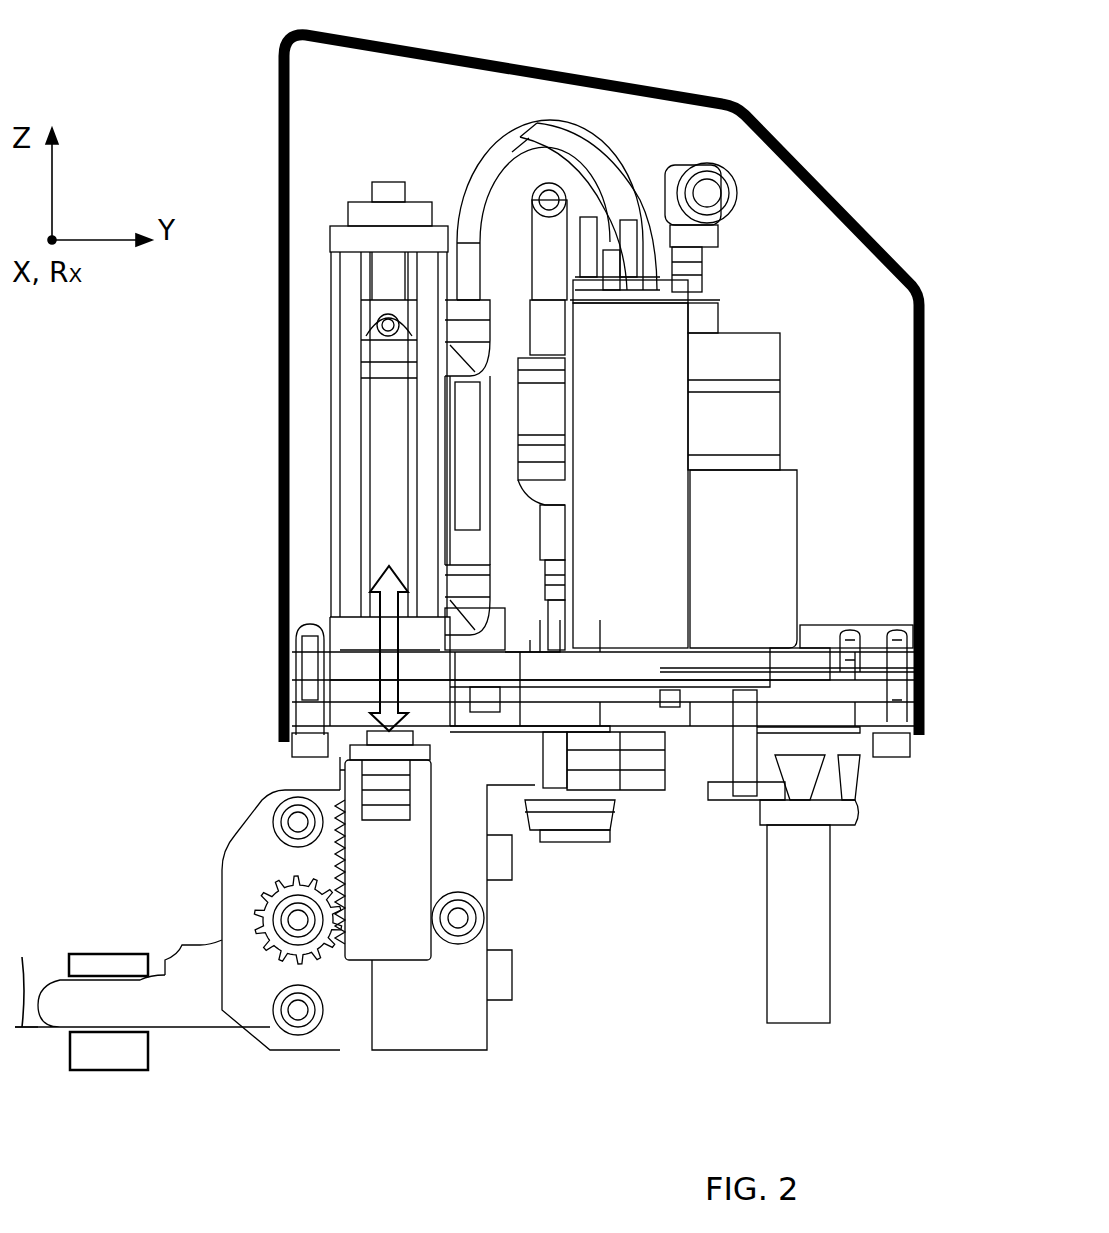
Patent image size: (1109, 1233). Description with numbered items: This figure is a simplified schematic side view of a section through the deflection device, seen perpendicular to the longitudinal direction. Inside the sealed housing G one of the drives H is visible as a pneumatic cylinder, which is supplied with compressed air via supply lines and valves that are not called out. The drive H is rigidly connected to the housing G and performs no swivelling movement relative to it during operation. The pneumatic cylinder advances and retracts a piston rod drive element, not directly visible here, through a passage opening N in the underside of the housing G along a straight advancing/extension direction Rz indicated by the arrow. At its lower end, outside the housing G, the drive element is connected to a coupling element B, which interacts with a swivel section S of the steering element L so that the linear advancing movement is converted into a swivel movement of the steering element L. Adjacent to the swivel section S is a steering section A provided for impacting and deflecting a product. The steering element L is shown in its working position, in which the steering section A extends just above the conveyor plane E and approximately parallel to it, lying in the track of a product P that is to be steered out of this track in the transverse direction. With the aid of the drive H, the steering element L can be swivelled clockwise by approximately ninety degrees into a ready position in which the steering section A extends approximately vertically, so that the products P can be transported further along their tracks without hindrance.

The housing G is at (642, 97).
The drive H is at (332, 430).
The advancing/extension direction Rz is at (360, 600).
The passage opening N is at (380, 735).
The steering element L is at (280, 941).
The conveyor plane E is at (24, 968).
The steering section A is at (145, 1005).
The product P is at (100, 1048).
The swivel section S is at (305, 965).
The coupling element B is at (393, 860).